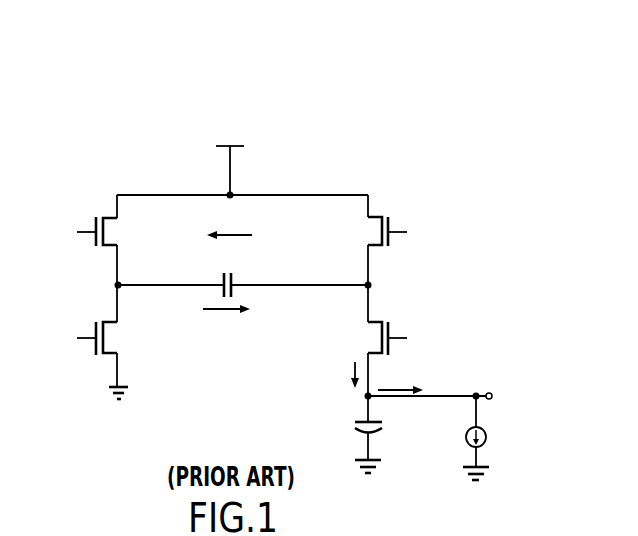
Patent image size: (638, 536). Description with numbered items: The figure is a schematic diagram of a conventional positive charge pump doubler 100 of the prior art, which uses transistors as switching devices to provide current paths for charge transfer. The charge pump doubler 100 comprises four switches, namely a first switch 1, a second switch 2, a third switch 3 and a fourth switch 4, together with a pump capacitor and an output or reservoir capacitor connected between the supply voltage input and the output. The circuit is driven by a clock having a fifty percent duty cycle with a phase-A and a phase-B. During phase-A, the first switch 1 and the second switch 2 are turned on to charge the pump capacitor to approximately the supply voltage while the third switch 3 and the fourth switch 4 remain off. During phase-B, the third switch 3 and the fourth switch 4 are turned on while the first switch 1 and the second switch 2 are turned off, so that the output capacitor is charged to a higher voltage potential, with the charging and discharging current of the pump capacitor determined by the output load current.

The charge pump doubler 100 is at (417, 180).
The switch M1 1 is at (381, 234).
The switch M2 2 is at (103, 339).
The switch M3 3 is at (103, 234).
The switch M4 4 is at (381, 339).